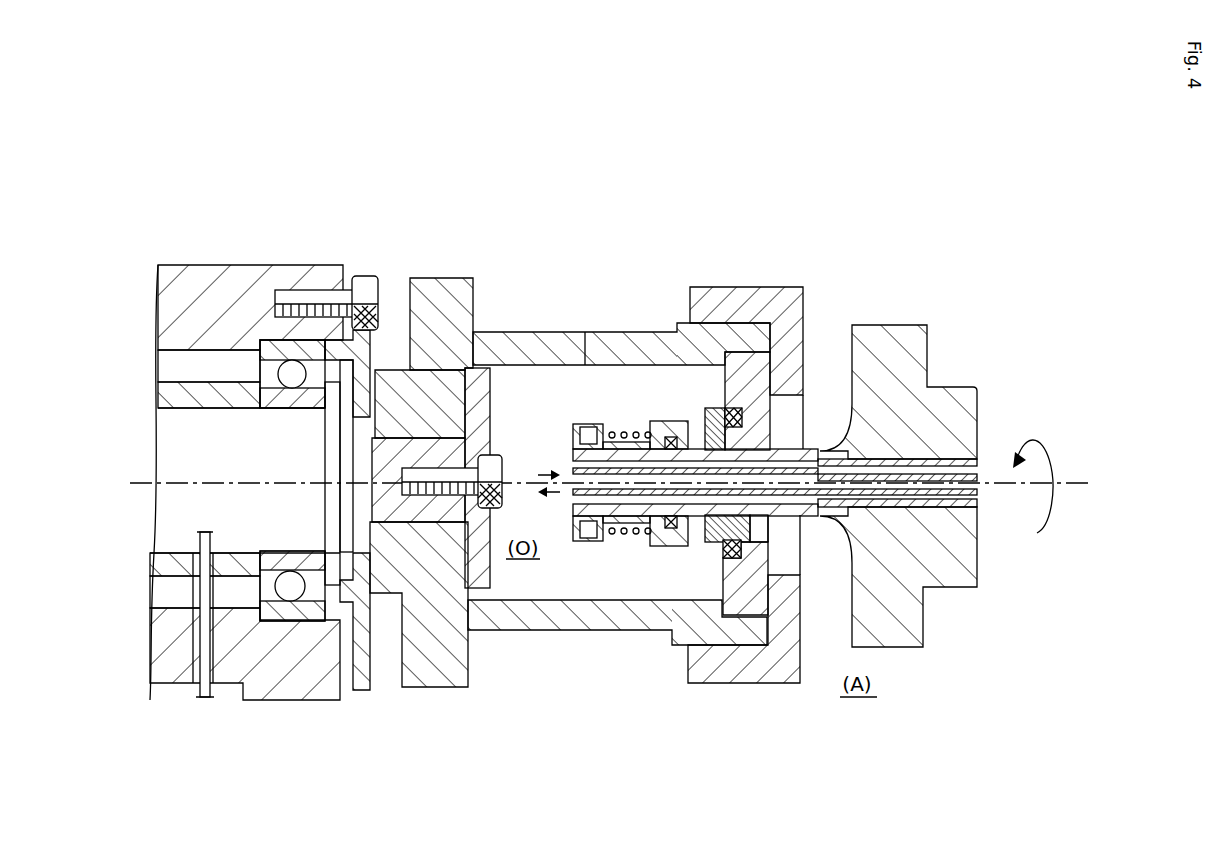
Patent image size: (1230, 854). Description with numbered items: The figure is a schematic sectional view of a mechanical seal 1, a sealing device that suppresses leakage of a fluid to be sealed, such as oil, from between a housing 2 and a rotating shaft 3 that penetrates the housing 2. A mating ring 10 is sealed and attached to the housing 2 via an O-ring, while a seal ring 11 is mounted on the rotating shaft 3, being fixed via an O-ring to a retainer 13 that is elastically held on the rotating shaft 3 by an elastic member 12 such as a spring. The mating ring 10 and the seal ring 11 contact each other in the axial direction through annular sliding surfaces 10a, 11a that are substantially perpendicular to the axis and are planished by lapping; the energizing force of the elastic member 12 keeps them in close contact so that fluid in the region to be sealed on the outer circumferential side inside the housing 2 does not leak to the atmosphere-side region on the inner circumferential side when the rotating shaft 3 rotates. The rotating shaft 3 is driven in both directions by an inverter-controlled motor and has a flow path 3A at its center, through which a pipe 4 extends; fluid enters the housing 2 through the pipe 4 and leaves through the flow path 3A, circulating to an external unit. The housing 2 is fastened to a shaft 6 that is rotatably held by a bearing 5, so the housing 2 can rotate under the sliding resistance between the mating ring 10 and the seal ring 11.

The mechanical seal 1 is at (636, 576).
The housing 2 is at (530, 620).
The rotating shaft 3 is at (893, 325).
The flow path 3A is at (937, 467).
The pipe 4 is at (918, 503).
The bearing 5 is at (297, 375).
The shaft 6 is at (193, 447).
The mating ring 10 is at (713, 407).
The sliding surface 10a is at (703, 553).
The seal ring 11 is at (697, 423).
The sliding surface 11a is at (714, 542).
The elastic member 12 is at (637, 427).
The retainer 13 is at (662, 418).